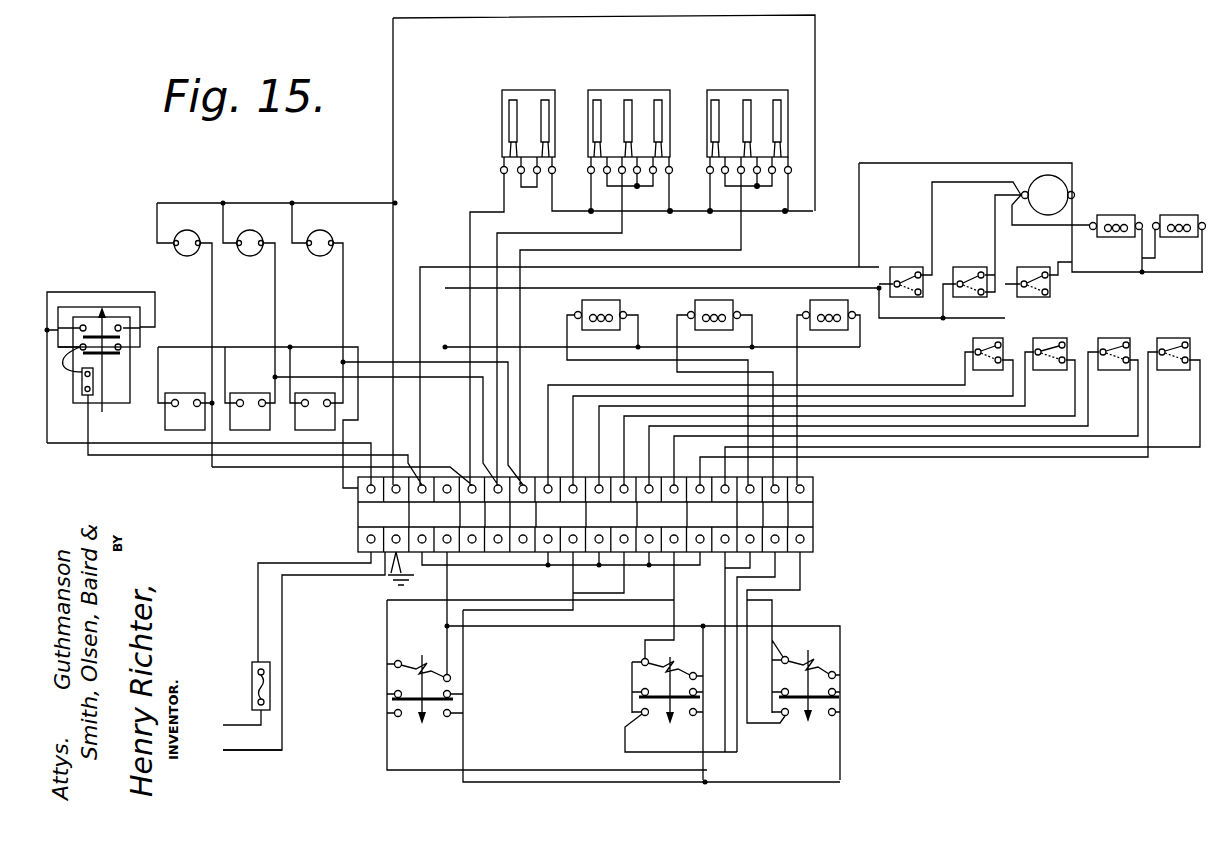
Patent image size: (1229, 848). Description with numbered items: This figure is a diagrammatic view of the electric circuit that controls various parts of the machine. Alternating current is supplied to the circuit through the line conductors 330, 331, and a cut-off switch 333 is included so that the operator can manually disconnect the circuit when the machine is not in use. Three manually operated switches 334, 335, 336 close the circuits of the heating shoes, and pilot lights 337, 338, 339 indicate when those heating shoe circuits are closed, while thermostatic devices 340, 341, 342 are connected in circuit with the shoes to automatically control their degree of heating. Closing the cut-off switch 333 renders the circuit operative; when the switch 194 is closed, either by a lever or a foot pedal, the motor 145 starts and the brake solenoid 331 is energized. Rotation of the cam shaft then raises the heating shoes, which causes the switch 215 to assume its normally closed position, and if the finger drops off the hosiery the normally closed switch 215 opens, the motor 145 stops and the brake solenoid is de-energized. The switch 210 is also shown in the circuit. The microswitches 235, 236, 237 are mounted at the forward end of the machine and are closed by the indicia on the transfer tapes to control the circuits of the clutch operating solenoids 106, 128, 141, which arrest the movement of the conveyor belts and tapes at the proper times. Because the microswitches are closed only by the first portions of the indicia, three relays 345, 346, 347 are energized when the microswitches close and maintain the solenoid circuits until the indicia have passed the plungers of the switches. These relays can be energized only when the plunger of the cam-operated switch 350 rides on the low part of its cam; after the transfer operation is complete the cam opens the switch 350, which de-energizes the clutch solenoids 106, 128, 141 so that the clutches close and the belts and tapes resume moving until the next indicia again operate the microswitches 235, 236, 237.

The thermostatic device 340 is at (527, 82).
The thermostatic device 341 is at (633, 82).
The thermostatic device 342 is at (755, 82).
The pilot light 337 is at (188, 257).
The pilot light 338 is at (250, 257).
The pilot light 339 is at (320, 257).
The cut-off switch 333 is at (117, 398).
The manually operated switch 334 is at (188, 432).
The manually operated switch 335 is at (258, 432).
The manually operated switch 336 is at (318, 432).
The clutch operating solenoid 106 is at (580, 311).
The clutch operating solenoid 128 is at (694, 311).
The clutch operating solenoid 141 is at (809, 311).
The motor 145 is at (1064, 185).
The line conductor / brake solenoid 331 is at (1119, 223).
The switch 194 is at (893, 267).
The normally closed switch 215 is at (968, 257).
The switch 210 is at (1030, 267).
The switch 350 is at (973, 341).
The microswitch 235 is at (1050, 338).
The microswitch 236 is at (1130, 326).
The microswitch 237 is at (1172, 338).
The relay 345 is at (464, 690).
The relay 346 is at (632, 688).
The relay 347 is at (848, 689).
The line conductor 330 is at (235, 712).